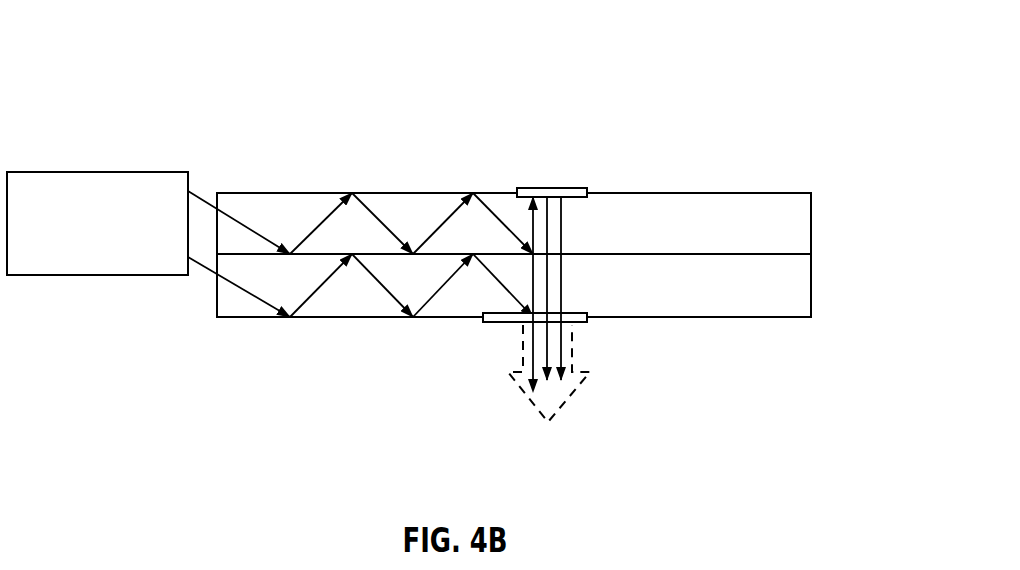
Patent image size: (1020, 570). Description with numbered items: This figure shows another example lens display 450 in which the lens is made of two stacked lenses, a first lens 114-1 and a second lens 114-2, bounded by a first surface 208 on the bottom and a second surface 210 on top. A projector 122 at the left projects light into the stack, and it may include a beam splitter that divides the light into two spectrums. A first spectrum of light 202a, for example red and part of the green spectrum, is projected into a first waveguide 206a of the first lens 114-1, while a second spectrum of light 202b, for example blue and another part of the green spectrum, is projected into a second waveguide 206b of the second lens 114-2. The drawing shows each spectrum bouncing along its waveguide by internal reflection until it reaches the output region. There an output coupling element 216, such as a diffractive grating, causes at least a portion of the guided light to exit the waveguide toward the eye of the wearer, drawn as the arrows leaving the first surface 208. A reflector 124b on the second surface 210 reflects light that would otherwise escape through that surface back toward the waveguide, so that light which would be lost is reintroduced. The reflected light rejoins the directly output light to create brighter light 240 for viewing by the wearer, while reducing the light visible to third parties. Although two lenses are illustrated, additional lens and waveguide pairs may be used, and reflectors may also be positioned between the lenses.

The lens display 450 is at (213, 53).
The projector 122 is at (97, 275).
The first spectrum of light 202a is at (360, 182).
The second spectrum of light 202b is at (340, 332).
The first waveguide 206a is at (407, 226).
The second waveguide 206b is at (345, 286).
The reflector 124b is at (569, 246).
The second surface 210 is at (742, 192).
The first surface 208 is at (745, 317).
The first lens 114-1 is at (811, 223).
The second lens 114-2 is at (811, 285).
The output coupling element 216 is at (577, 322).
The brighter light 240 is at (562, 407).